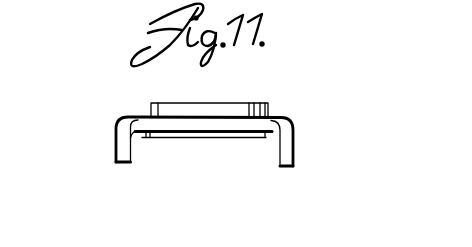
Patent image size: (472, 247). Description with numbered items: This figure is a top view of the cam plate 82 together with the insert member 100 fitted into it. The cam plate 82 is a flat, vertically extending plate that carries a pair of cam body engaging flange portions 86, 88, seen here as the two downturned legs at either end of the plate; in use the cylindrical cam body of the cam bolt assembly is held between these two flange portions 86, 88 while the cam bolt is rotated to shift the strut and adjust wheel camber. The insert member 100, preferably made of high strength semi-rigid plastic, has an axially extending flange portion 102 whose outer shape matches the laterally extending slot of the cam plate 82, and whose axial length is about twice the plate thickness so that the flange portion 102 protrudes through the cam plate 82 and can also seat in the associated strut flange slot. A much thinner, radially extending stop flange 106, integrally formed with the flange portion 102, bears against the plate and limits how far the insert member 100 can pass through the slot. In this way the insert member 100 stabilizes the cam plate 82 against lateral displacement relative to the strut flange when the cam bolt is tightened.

The cam plate 82 is at (300, 127).
The cam body engaging flange portion 86 is at (294, 157).
The cam body engaging flange portion 88 is at (120, 142).
The insert member 100 is at (278, 111).
The axially extending flange portion 102 is at (217, 110).
The stop flange 106 is at (175, 138).